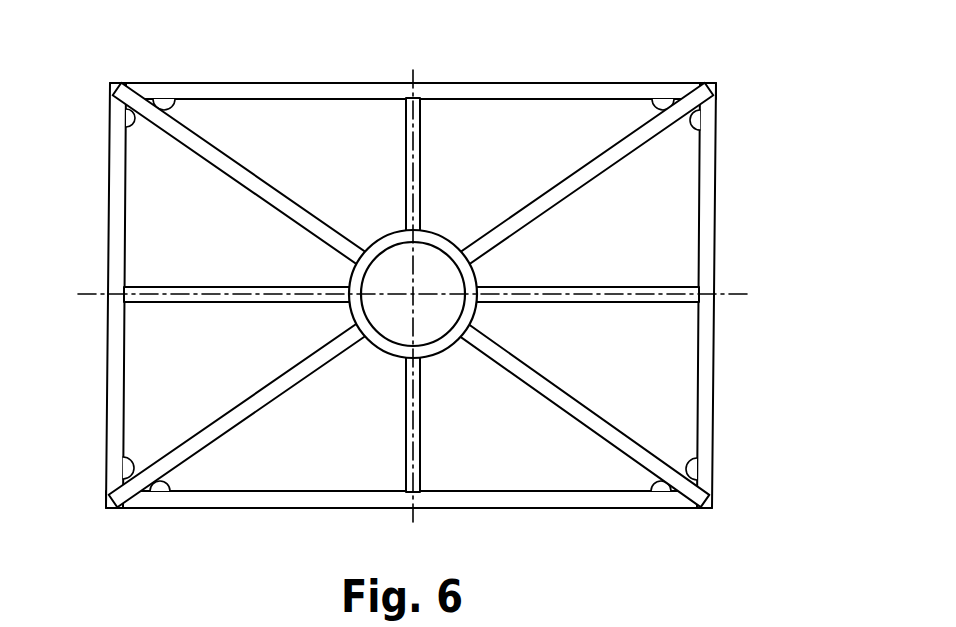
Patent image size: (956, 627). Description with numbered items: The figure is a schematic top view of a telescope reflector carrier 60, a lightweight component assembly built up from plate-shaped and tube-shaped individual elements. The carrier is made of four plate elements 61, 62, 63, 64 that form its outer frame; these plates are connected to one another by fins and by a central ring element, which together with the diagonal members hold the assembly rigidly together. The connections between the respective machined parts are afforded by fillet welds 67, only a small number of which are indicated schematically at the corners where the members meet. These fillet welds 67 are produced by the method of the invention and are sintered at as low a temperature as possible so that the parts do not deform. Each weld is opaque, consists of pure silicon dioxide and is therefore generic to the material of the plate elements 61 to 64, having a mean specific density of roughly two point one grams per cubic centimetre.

The telescope reflector carrier 60 is at (726, 231).
The plate element 61 is at (352, 83).
The plate element 62 is at (713, 353).
The plate element 63 is at (258, 507).
The plate element 64 is at (110, 190).
The fillet weld 67 is at (706, 544).